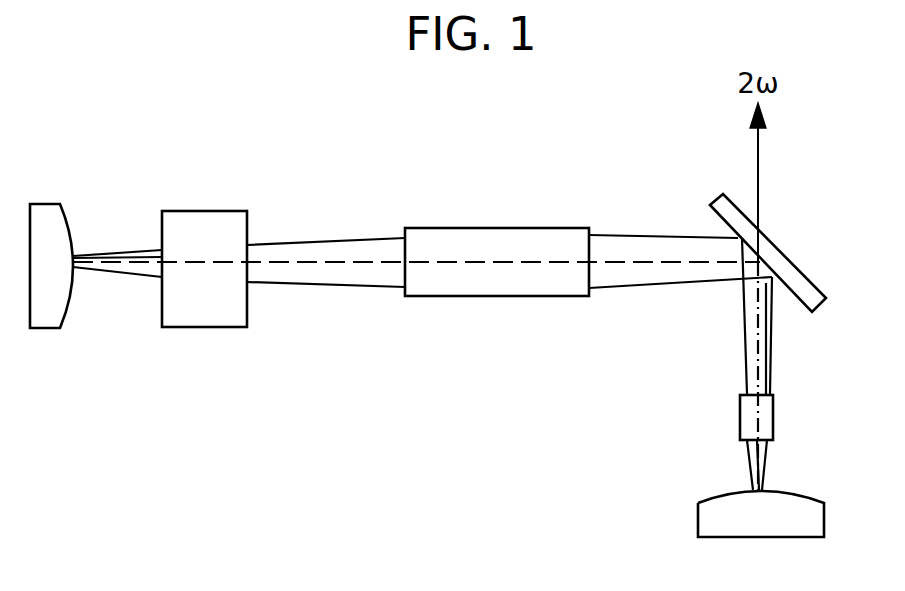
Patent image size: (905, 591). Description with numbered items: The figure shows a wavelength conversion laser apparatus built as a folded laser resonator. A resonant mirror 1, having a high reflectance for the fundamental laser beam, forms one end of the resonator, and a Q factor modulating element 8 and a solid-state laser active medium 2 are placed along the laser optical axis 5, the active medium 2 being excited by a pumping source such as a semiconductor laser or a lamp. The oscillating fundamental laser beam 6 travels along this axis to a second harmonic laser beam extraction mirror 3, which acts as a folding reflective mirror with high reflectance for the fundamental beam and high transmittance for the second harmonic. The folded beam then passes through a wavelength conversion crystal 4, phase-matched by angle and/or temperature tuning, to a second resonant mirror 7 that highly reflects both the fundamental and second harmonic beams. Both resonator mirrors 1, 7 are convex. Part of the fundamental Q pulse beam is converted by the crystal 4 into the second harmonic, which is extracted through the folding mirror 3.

The resonant mirror 1 is at (65, 330).
The Q factor modulating element 8 is at (192, 328).
The solid-state laser active medium 2 is at (482, 297).
The second harmonic laser beam extraction mirror 3 is at (785, 253).
The wavelength conversion crystal 4 is at (773, 412).
The resonant mirror 7 is at (698, 527).
The laser optical axis 5 is at (313, 260).
The oscillating fundamental laser beam 6 is at (381, 240).